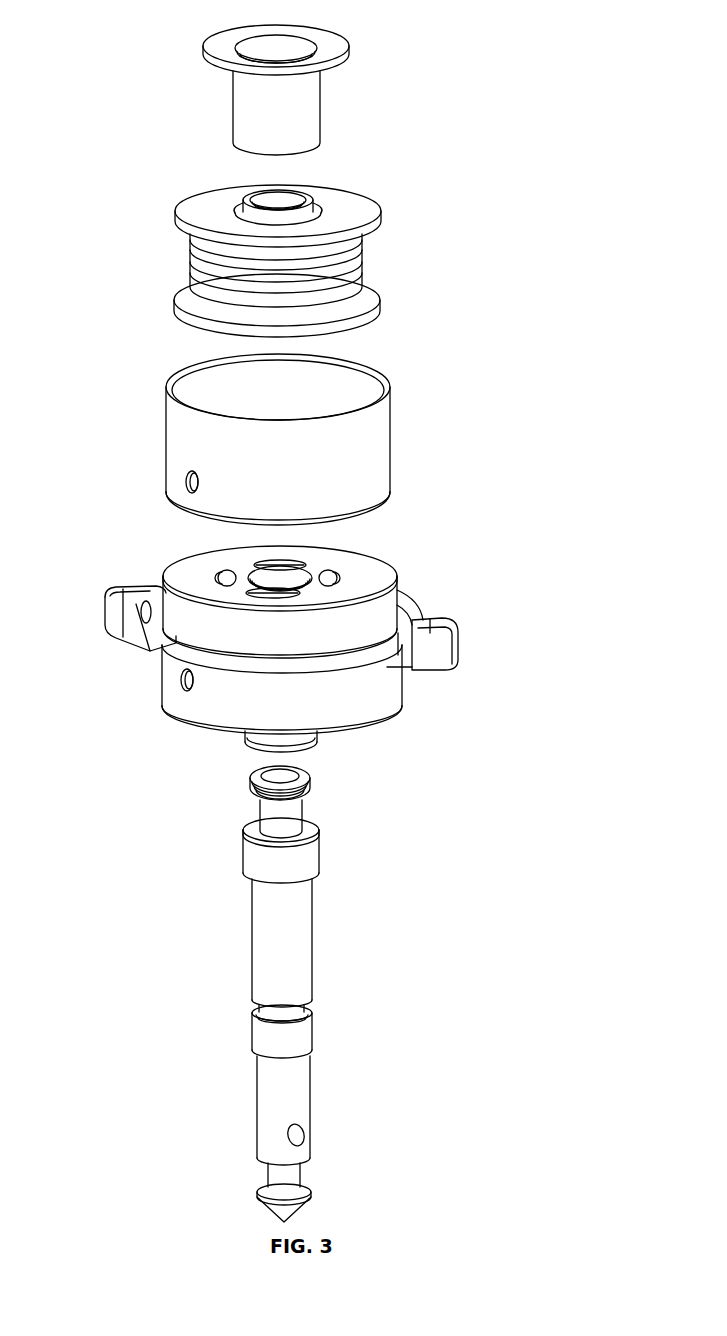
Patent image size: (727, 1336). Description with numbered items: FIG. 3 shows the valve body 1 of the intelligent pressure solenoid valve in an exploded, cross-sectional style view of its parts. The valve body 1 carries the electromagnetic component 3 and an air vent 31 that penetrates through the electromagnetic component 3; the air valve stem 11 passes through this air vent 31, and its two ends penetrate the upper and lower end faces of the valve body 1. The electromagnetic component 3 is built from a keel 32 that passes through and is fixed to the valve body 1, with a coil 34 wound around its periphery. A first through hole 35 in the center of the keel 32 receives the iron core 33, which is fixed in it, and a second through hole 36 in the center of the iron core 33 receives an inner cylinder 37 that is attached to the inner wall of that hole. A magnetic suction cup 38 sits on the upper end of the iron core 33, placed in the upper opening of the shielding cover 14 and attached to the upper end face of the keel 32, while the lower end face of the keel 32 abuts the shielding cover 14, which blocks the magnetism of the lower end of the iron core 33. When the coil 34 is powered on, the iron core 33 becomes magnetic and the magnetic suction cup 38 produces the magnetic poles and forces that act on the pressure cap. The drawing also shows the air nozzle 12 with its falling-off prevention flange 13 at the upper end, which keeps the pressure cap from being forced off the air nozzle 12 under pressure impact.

The valve body 1 is at (375, 698).
The electromagnetic component 3 is at (307, 248).
The air valve stem 11 is at (290, 917).
The air nozzle 12 is at (288, 817).
The falling-off prevention flange 13 is at (310, 782).
The shielding cover 14 is at (353, 438).
The air vent 31 is at (176, 211).
The keel 32 is at (368, 312).
The iron core 33 is at (300, 108).
The coil 34 is at (350, 275).
The first through hole 35 is at (320, 223).
The second through hole 36 is at (303, 47).
The inner cylinder 37 is at (303, 200).
The magnetic suction cup 38 is at (307, 72).